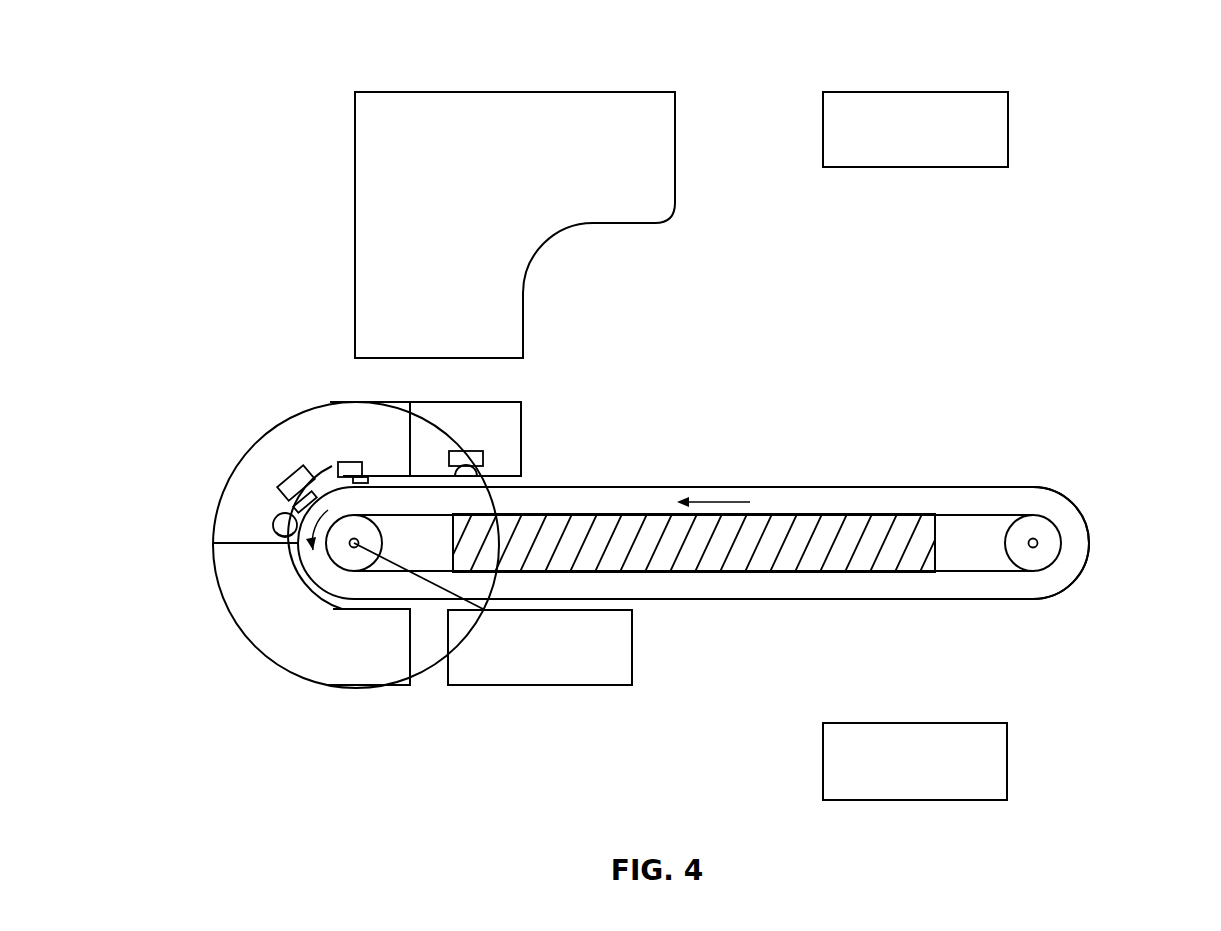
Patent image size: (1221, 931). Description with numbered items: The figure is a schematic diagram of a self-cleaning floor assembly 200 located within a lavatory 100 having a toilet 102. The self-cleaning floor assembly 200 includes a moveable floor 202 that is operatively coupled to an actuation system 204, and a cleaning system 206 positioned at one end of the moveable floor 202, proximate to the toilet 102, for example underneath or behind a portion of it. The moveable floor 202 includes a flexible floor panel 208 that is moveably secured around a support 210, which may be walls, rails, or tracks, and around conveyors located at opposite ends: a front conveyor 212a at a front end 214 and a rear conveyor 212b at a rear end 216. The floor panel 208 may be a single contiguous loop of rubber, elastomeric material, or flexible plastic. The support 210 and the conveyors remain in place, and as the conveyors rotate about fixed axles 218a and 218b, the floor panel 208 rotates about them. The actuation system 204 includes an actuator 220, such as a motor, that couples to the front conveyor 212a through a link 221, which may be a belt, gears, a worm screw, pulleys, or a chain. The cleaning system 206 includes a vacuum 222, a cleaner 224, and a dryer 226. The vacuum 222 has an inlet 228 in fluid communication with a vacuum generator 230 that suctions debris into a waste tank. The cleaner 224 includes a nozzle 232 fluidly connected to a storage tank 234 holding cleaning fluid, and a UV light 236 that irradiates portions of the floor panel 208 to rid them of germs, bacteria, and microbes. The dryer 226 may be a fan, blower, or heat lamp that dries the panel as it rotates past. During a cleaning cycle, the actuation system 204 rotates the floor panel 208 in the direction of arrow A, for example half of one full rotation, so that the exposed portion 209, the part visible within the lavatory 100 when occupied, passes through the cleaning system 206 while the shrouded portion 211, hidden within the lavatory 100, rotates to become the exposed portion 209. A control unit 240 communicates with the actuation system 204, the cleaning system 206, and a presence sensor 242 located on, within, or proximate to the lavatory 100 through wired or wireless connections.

The lavatory 100 is at (754, 254).
The toilet 102 is at (634, 90).
The self-cleaning floor assembly 200 is at (983, 418).
The moveable floor 202 is at (855, 482).
The actuation system 204 is at (555, 700).
The cleaning system 206 is at (247, 432).
The floor panel 208 is at (655, 487).
The exposed portion 209 is at (780, 482).
The support 210 is at (898, 535).
The shrouded portion 211 is at (735, 572).
The front conveyor 212a is at (383, 533).
The rear conveyor 212b is at (1038, 527).
The front end 214 is at (345, 578).
The rear end 216 is at (1048, 576).
The fixed axle 218a is at (354, 543).
The fixed axle 218b is at (1040, 543).
The actuator 220 is at (632, 648).
The link 221 is at (433, 580).
The vacuum 222 is at (521, 412).
The cleaner 224 is at (231, 474).
The dryer 226 is at (357, 686).
The inlet 228 is at (482, 468).
The vacuum generator 230 is at (449, 452).
The nozzle 232 is at (274, 524).
The storage tank 234 is at (297, 504).
The UV light 236 is at (282, 537).
The control unit 240 is at (823, 762).
The presence sensor 242 is at (1008, 131).
The arrow A is at (714, 500).